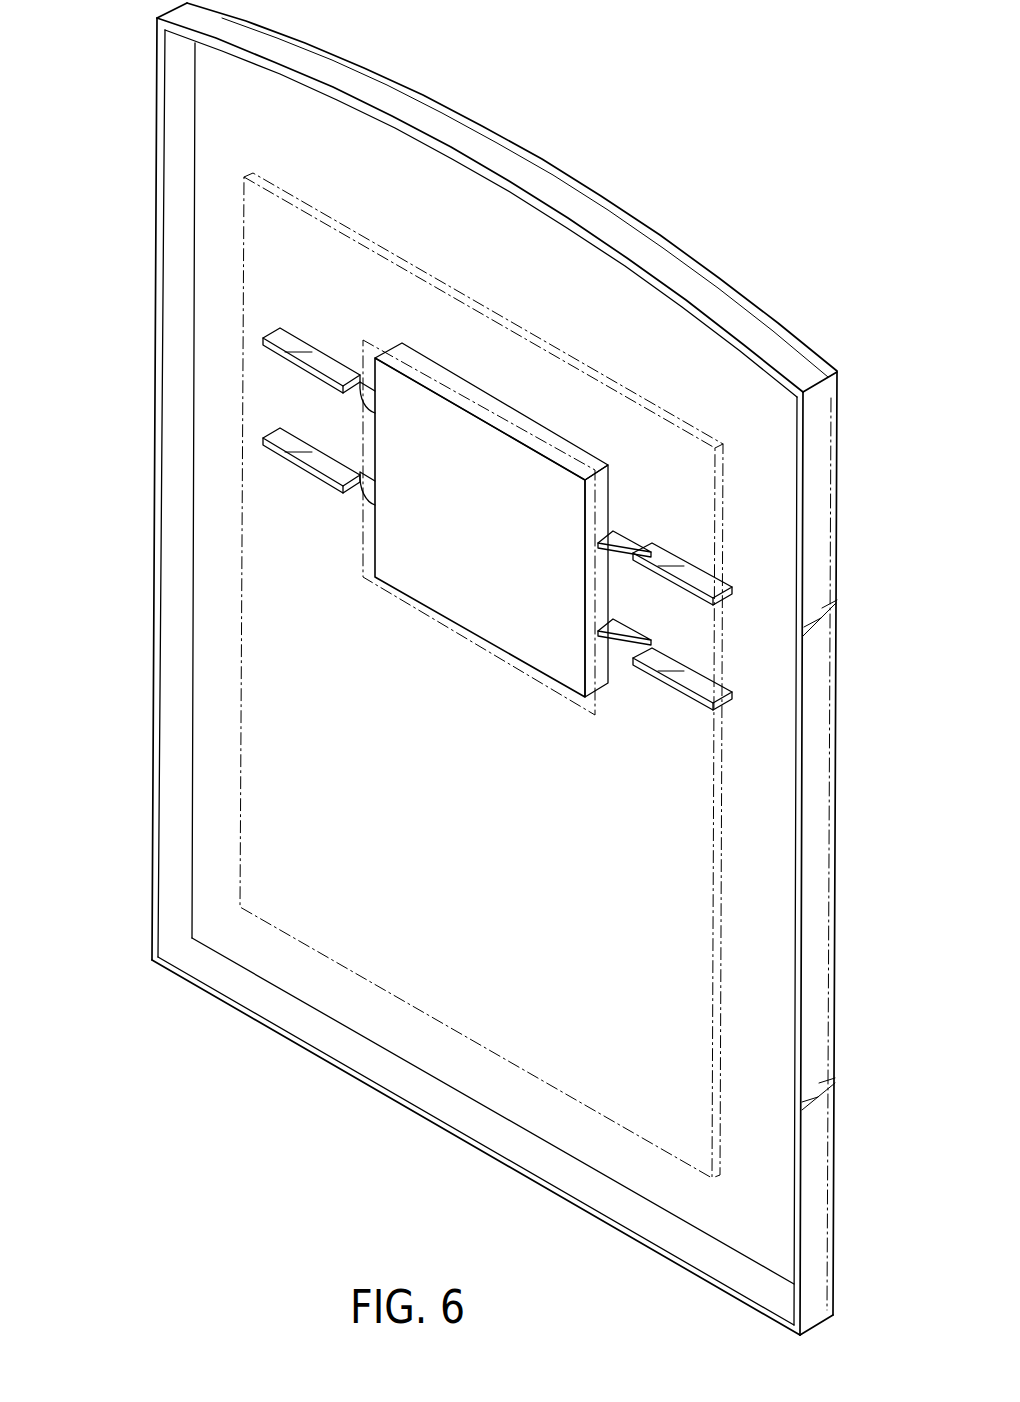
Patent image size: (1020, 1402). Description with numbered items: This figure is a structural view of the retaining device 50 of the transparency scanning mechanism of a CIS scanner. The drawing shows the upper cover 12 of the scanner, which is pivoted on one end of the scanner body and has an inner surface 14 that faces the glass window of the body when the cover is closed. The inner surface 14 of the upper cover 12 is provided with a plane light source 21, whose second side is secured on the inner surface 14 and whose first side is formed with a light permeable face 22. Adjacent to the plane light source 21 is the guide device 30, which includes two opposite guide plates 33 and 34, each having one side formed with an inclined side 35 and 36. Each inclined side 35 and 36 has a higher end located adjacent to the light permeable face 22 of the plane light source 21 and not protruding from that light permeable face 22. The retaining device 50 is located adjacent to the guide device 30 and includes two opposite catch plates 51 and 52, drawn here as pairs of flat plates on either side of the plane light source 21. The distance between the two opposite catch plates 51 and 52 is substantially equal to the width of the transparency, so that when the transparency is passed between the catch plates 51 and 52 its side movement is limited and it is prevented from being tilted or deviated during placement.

The upper cover 12 is at (812, 813).
The inner surface 14 is at (372, 157).
The plane light source 21 is at (482, 392).
The light permeable face 22 is at (445, 605).
The guide device 30 is at (582, 432).
The guide plate 33 is at (543, 351).
The guide plate 34 is at (582, 522).
The inclined side 35 is at (598, 547).
The inclined side 36 is at (612, 643).
The retaining device 50 is at (498, 462).
The catch plate 51 is at (260, 333).
The catch plate 52 is at (260, 433).